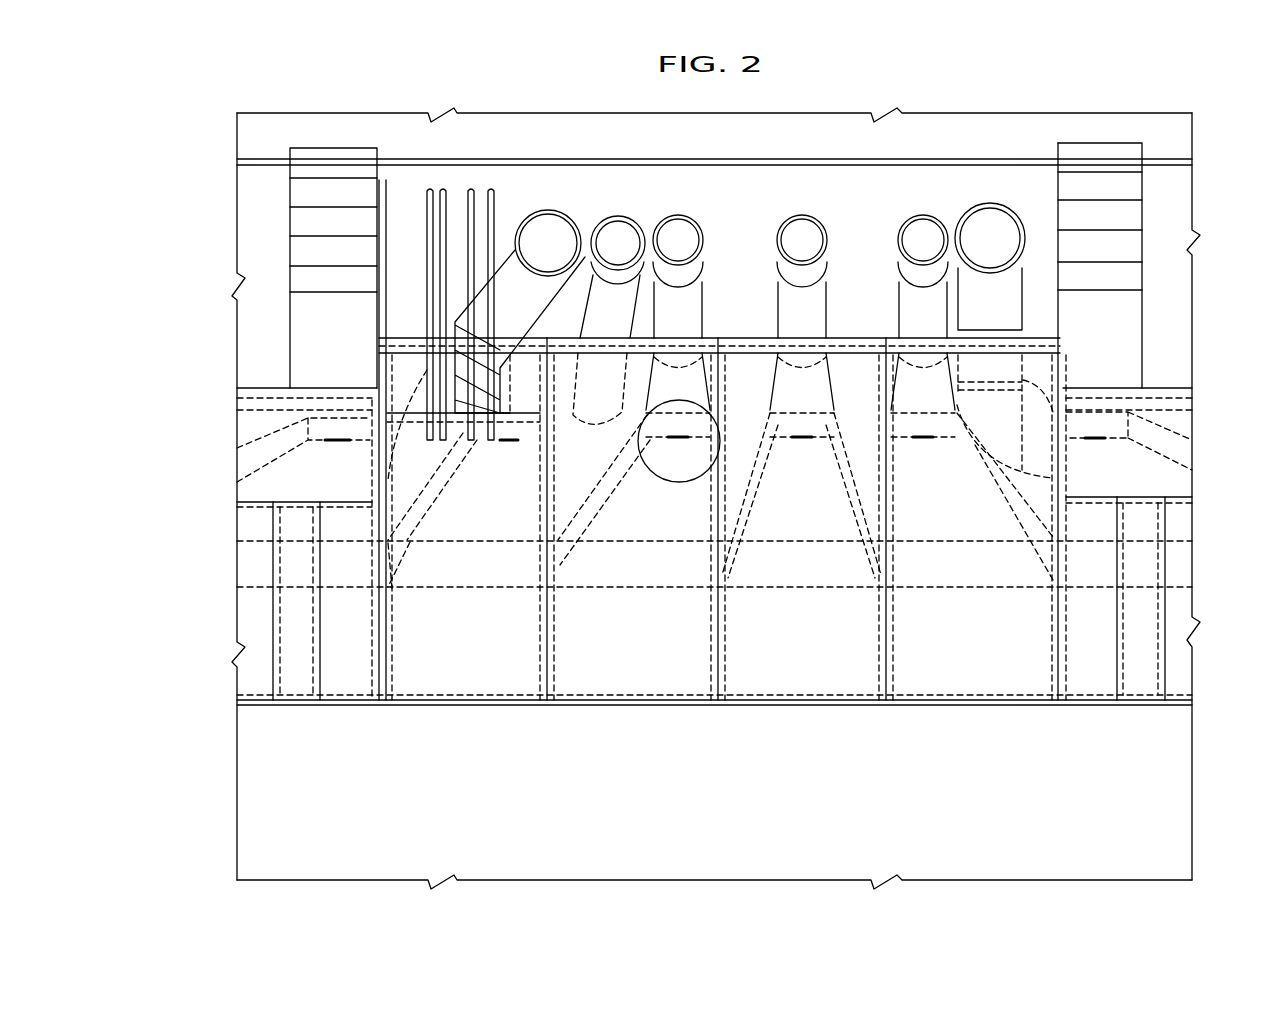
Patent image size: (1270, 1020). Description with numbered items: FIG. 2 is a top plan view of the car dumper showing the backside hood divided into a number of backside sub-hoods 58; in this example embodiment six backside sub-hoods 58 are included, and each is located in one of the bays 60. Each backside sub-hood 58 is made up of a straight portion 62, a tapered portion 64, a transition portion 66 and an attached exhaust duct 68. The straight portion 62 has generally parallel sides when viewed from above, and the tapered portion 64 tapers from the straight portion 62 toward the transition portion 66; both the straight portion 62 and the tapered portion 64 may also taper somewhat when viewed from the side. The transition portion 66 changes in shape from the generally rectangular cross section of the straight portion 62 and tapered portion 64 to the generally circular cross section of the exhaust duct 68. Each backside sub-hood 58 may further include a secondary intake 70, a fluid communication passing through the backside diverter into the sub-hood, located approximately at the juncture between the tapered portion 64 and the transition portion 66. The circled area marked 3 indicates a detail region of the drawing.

The backside sub-hood 58 is at (289, 493).
The bay 60 is at (298, 707).
The straight portion 62 is at (352, 667).
The tapered portion 64 is at (237, 488).
The transition portion 66 is at (399, 463).
The exhaust duct 68 is at (566, 210).
The secondary intake 70 is at (333, 442).
The detail area of FIG. 3 is at (648, 478).